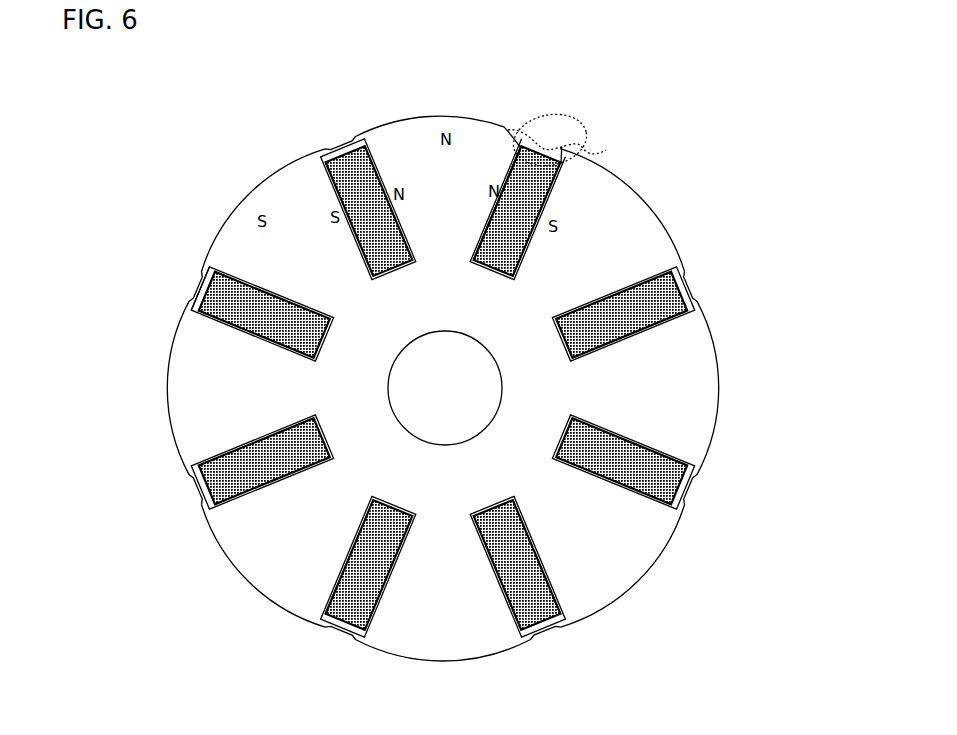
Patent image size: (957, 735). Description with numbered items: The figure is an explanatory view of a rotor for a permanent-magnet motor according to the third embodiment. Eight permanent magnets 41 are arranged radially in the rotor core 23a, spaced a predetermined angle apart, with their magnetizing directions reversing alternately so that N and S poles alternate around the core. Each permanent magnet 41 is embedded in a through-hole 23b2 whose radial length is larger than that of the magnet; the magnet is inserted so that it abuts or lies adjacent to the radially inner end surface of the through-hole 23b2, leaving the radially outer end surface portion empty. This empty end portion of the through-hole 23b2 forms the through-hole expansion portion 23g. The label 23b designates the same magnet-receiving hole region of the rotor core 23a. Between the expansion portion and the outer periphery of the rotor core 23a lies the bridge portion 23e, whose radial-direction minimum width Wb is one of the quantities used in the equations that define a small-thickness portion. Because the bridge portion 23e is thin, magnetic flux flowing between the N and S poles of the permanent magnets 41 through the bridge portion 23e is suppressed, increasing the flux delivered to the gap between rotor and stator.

The rotor core 23a is at (232, 220).
The permanent magnet 23b is at (352, 144).
The through-hole 23b2 is at (513, 160).
The bridge portion 23e is at (568, 137).
The through-hole expansion portion 23g is at (593, 157).
The permanent magnet 41 is at (685, 288).
The radial-direction minimum width Wb is at (203, 290).